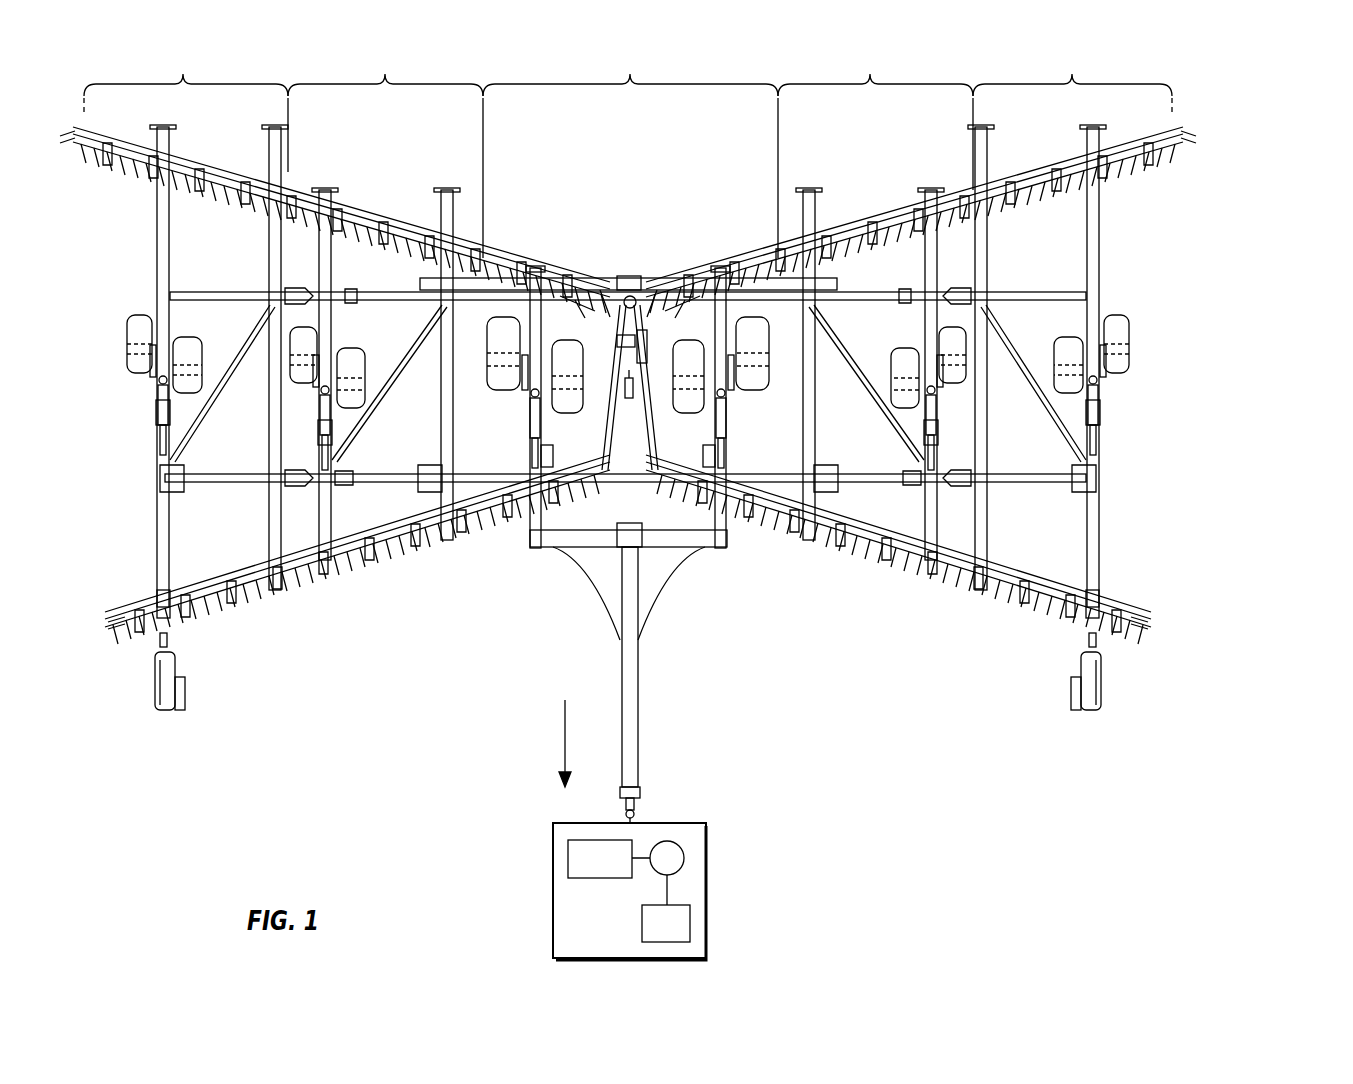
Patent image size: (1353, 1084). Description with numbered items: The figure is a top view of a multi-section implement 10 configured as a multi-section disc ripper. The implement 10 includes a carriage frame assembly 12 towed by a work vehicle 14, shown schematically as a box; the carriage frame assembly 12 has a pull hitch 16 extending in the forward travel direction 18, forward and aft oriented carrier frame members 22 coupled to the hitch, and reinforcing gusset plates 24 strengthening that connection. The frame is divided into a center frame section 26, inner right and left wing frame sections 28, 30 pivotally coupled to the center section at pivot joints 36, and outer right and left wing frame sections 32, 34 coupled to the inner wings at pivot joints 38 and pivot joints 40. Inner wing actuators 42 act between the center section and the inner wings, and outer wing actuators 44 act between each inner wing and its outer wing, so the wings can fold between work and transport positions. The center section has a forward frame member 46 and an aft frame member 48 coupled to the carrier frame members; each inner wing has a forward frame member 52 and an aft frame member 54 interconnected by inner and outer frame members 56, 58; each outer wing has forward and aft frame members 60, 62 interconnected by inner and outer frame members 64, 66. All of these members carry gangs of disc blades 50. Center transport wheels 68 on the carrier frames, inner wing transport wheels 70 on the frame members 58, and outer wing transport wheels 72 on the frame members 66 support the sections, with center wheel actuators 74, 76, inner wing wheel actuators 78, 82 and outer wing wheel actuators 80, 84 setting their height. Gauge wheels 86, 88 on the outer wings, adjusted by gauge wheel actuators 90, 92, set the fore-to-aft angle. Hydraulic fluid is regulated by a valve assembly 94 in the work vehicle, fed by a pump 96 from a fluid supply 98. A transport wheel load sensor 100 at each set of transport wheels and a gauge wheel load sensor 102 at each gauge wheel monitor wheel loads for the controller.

The multi-section implement 10 is at (1250, 220).
The carriage frame assembly 12 is at (717, 553).
The work vehicle 14 is at (710, 893).
The pull hitch 16 is at (640, 745).
The forward travel direction 18 is at (560, 730).
The carrier frame members 22 is at (540, 530).
The reinforcing gusset plates 24 is at (608, 625).
The center frame section 26 is at (630, 147).
The inner right wing frame section 28 is at (875, 113).
The inner left wing frame section 30 is at (385, 104).
The outer right wing frame section 32 is at (1072, 76).
The outer left wing frame section 34 is at (186, 76).
The pivot joints 36 is at (490, 230).
The pivot joints 38 is at (975, 185).
The pivot joints 40 is at (283, 187).
The inner wing actuators 42 is at (580, 262).
The outer wing actuators 44 is at (380, 293).
The forward frame member 46 is at (577, 502).
The aft frame member 48 is at (607, 280).
The gangs of disc blades 50 is at (205, 150).
The forward frame member 52 is at (390, 553).
The aft frame member 54 is at (345, 192).
The inner frame member 56 is at (447, 383).
The outer frame member 58 is at (330, 315).
The forward frame member 60 is at (140, 637).
The aft frame member 62 is at (138, 135).
The inner frame member 64 is at (275, 520).
The outer frame member 66 is at (160, 527).
The center transport wheels 68 is at (497, 413).
The inner wing transport wheels 70 is at (350, 415).
The outer wing transport wheels 72 is at (140, 390).
The center wheel actuator 74 is at (545, 450).
The center wheel actuator 76 is at (715, 447).
The inner wing wheel actuator 78 is at (923, 432).
The outer wing wheel actuator 80 is at (1100, 425).
The inner wing wheel actuator 82 is at (320, 432).
The outer wing wheel actuator 84 is at (160, 427).
The gauge wheel 86 is at (1118, 700).
The gauge wheel 88 is at (157, 703).
The gauge wheel actuator 90 is at (1100, 600).
The gauge wheel actuator 92 is at (160, 598).
The valve assembly 94 is at (575, 858).
The pump 96 is at (690, 858).
The fluid supply 98 is at (688, 925).
The transport wheel load sensor 100 is at (145, 355).
The gauge wheel load sensor 102 is at (177, 667).